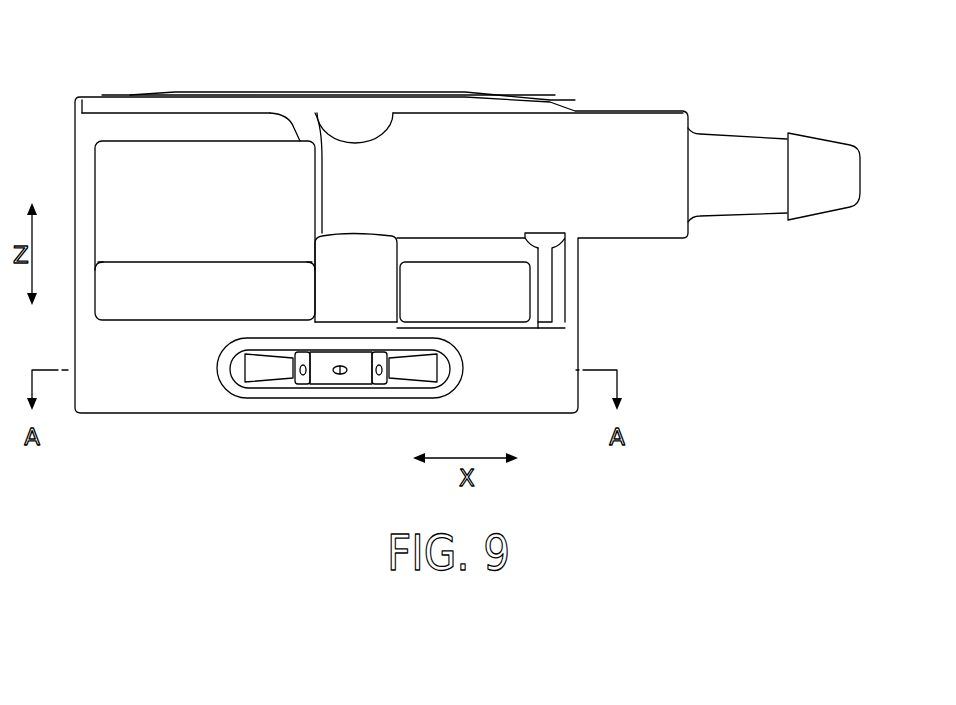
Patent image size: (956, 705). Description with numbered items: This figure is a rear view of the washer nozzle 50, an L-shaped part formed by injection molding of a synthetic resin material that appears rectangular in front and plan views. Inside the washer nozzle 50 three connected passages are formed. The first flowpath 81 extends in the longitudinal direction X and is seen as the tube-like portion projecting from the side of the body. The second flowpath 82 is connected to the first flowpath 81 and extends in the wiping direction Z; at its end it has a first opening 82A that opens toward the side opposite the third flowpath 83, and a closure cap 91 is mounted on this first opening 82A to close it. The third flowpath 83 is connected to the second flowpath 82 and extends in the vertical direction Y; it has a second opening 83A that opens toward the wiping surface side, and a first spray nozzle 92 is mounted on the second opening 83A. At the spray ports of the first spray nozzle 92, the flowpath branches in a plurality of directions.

The washer nozzle 50 is at (557, 101).
The first flowpath 81 is at (637, 223).
The second flowpath 82 is at (355, 283).
The first opening 82A is at (377, 133).
The third flowpath 83 is at (315, 401).
The second opening 83A is at (218, 370).
The closure cap 91 is at (338, 122).
The first spray nozzle 92 is at (357, 371).